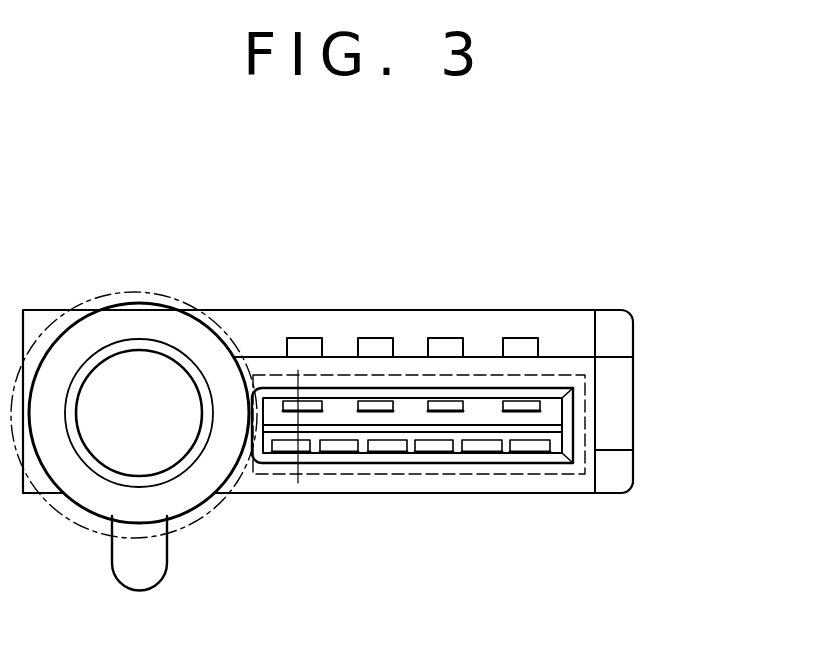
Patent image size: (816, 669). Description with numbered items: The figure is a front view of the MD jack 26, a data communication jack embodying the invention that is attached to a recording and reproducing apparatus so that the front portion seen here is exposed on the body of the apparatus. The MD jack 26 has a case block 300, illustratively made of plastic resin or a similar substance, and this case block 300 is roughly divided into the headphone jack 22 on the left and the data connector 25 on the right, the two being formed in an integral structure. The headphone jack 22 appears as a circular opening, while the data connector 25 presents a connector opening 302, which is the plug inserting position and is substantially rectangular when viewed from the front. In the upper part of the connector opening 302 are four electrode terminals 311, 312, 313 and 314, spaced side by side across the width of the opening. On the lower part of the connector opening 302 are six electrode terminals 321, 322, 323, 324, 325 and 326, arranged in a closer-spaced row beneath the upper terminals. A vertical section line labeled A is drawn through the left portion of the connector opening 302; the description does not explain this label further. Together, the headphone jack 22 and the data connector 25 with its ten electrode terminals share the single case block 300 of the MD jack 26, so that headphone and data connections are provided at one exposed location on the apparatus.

The MD jack 26 is at (225, 220).
The headphone jack 22 is at (82, 302).
The data connector 25 is at (412, 365).
The case block 300 is at (348, 308).
The connector opening 302 is at (555, 438).
The section line A is at (296, 378).
The electrode terminal 311 is at (312, 400).
The electrode terminal 312 is at (378, 400).
The electrode terminal 313 is at (455, 403).
The electrode terminal 314 is at (527, 400).
The electrode terminal 321 is at (283, 452).
The electrode terminal 322 is at (332, 453).
The electrode terminal 323 is at (390, 452).
The electrode terminal 324 is at (447, 453).
The electrode terminal 325 is at (490, 452).
The electrode terminal 326 is at (542, 452).